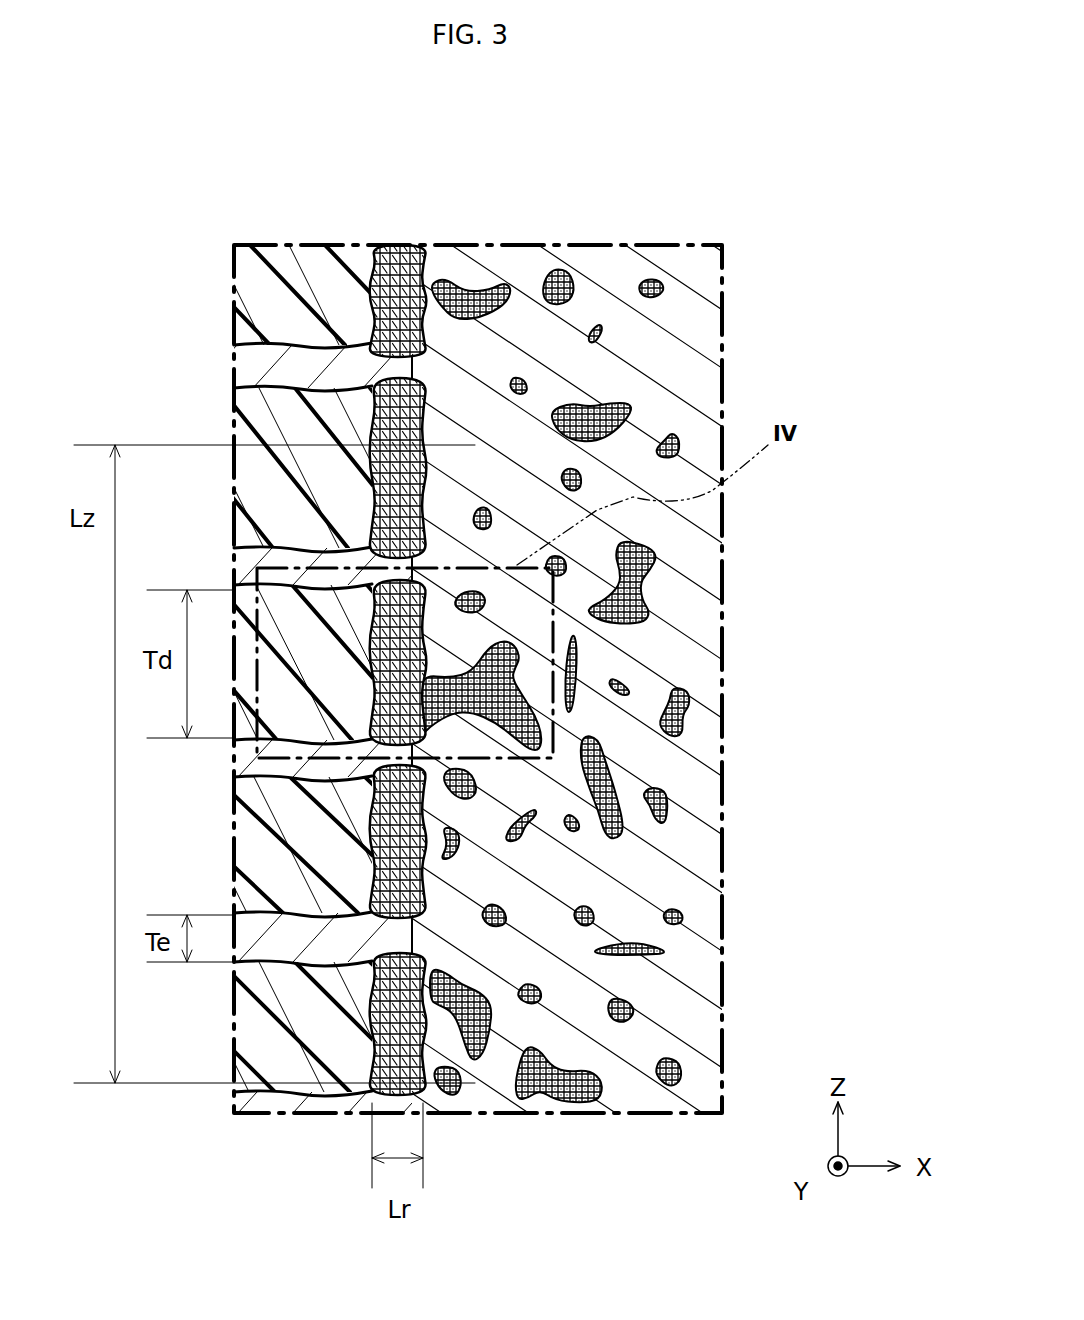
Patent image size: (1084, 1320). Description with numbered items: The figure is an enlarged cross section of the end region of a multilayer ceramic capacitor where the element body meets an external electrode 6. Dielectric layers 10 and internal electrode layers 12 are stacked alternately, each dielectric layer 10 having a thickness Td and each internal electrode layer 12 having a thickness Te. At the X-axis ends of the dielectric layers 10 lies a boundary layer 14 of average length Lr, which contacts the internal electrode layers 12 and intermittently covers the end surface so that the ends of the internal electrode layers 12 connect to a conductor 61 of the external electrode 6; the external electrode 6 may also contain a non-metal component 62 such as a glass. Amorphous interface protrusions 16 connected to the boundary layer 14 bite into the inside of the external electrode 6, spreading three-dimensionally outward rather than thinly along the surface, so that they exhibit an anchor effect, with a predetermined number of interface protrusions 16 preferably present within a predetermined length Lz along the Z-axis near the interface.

The external electrode 6 is at (598, 302).
The dielectric layer 10 is at (284, 862).
The internal electrode layer 12 is at (256, 365).
The boundary layer 14 is at (402, 292).
The interface protrusion 16 is at (500, 662).
The conductor 61 is at (697, 298).
The non-metal component 62 is at (630, 408).